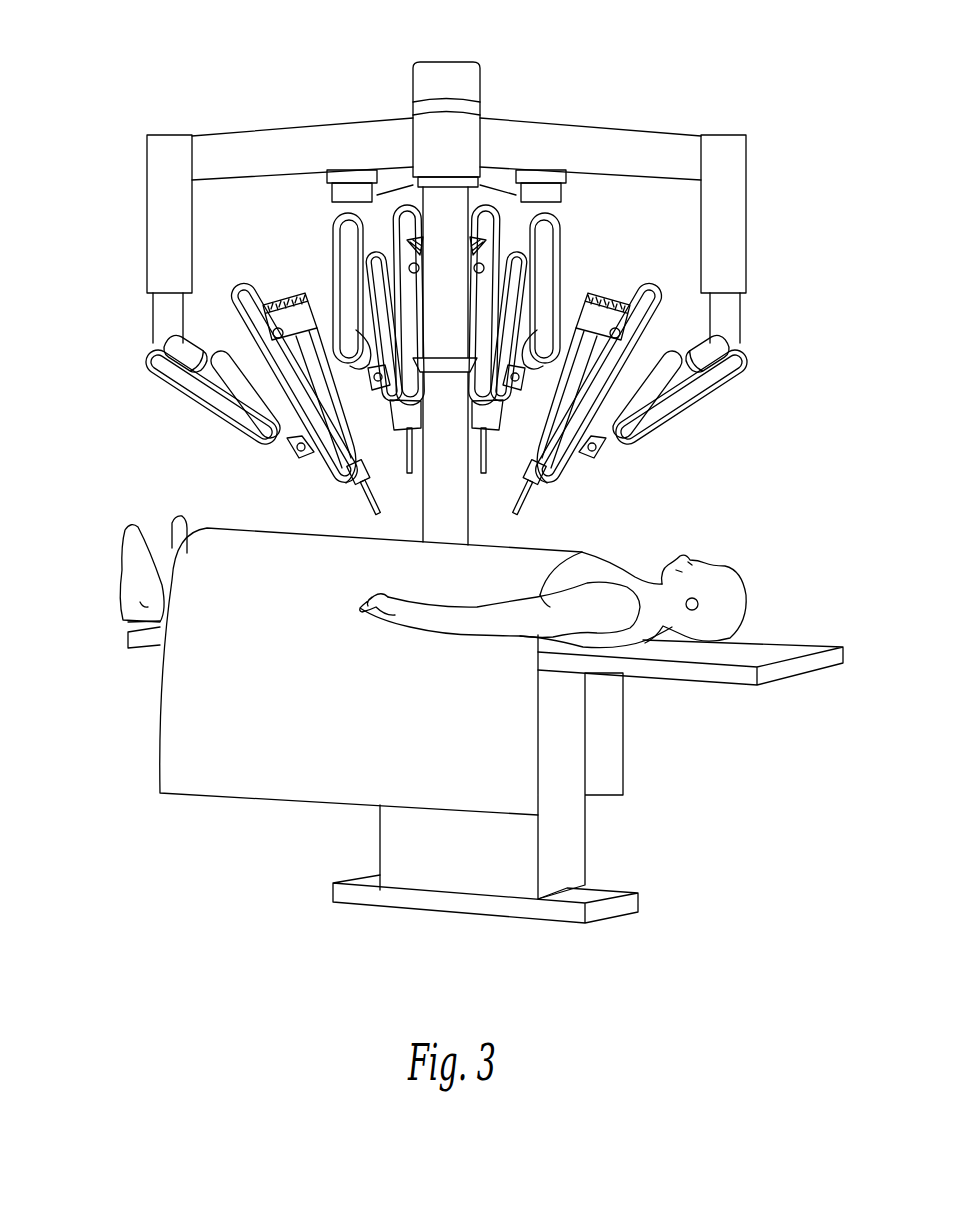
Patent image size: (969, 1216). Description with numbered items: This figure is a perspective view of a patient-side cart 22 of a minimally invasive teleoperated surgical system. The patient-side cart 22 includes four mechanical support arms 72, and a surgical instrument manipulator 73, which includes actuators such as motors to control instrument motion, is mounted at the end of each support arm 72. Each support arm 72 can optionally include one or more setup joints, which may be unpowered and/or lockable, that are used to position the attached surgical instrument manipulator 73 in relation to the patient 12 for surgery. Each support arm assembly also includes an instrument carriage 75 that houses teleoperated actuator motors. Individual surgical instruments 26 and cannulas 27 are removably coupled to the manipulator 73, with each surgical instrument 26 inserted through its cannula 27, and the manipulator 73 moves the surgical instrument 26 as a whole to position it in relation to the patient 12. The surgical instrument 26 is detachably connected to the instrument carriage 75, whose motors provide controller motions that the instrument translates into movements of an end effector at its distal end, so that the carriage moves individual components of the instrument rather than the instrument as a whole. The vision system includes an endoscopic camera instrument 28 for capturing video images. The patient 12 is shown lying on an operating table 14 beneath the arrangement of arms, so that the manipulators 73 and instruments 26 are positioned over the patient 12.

The patient-side cart 22 is at (96, 17).
The mechanical support arm 72 is at (147, 262).
The surgical instrument manipulator 73 is at (160, 350).
The instrument carriage 75 is at (312, 310).
The endoscopic camera instrument 28 is at (423, 265).
The surgical instrument 26 is at (405, 460).
The cannula 27 is at (375, 513).
The patient 12 is at (697, 540).
The operating table 14 is at (790, 652).